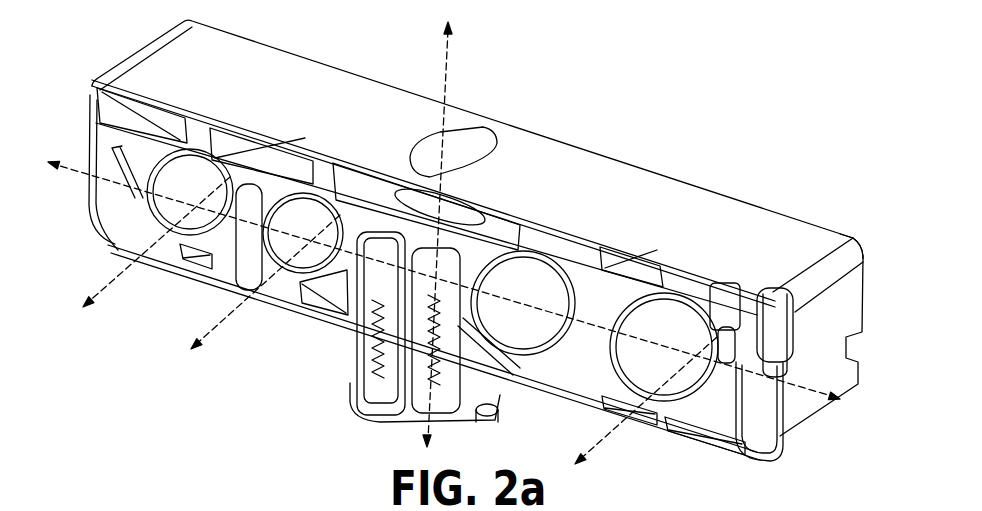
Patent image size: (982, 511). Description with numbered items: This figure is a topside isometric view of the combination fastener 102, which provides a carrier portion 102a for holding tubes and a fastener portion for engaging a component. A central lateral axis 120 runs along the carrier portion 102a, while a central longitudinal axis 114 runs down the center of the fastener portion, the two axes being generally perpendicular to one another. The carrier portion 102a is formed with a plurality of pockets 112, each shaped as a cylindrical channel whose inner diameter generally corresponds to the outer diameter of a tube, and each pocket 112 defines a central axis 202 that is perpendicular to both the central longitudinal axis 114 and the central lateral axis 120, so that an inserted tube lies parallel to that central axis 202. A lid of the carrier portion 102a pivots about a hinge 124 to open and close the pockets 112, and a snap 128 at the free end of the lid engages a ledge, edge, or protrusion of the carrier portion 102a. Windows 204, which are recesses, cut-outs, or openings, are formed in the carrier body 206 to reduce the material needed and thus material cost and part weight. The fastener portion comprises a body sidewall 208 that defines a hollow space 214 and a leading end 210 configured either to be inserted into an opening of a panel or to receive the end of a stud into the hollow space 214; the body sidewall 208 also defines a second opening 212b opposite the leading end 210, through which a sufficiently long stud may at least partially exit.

The combination fastener 102 is at (455, 210).
The carrier portion 102a is at (875, 232).
The pockets 112 is at (182, 187).
The central longitudinal axis 114 is at (448, 72).
The central lateral axis 120 is at (840, 400).
The hinge 124 is at (853, 240).
The snap 128 is at (115, 165).
The central axis 202 is at (117, 273).
The windows 204 is at (150, 122).
The carrier body 206 is at (780, 447).
The body sidewall 208 is at (353, 380).
The leading end 210 is at (358, 416).
The second opening 212b is at (493, 137).
The hollow space 214 is at (355, 355).